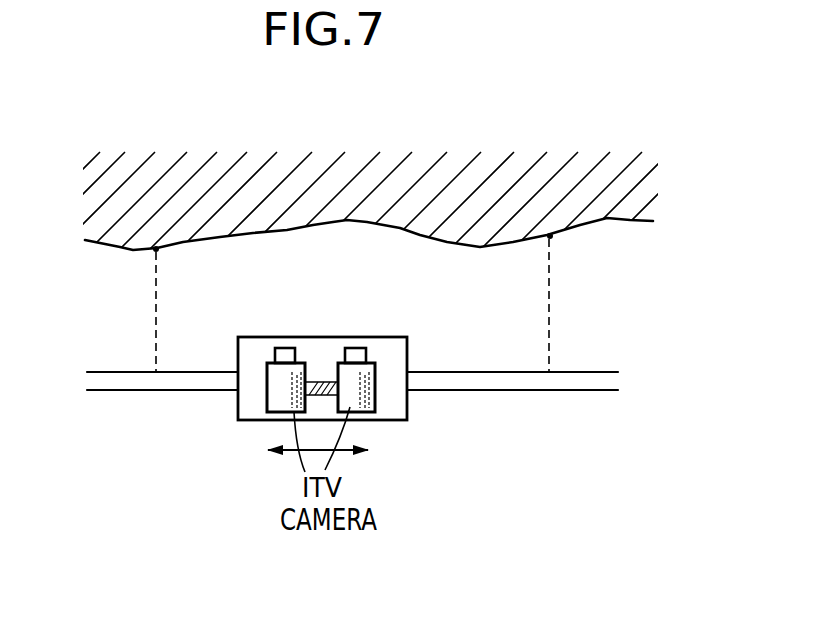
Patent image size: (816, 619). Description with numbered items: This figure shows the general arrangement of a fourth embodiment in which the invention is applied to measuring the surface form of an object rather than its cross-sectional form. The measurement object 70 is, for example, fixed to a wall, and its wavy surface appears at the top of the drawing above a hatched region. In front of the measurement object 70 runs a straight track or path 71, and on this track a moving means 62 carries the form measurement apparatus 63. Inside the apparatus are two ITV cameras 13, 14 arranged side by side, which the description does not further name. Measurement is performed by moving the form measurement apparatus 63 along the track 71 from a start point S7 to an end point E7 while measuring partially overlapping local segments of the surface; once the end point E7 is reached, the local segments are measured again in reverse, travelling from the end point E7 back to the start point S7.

The measurement object 70 is at (103, 245).
The start point S7 is at (156, 250).
The end point E7 is at (551, 237).
The straight track or path 71 is at (140, 391).
The ITV camera 13 is at (272, 391).
The ITV camera 14 is at (376, 406).
The moving means 62 is at (403, 421).
The form measurement apparatus 63 is at (250, 421).